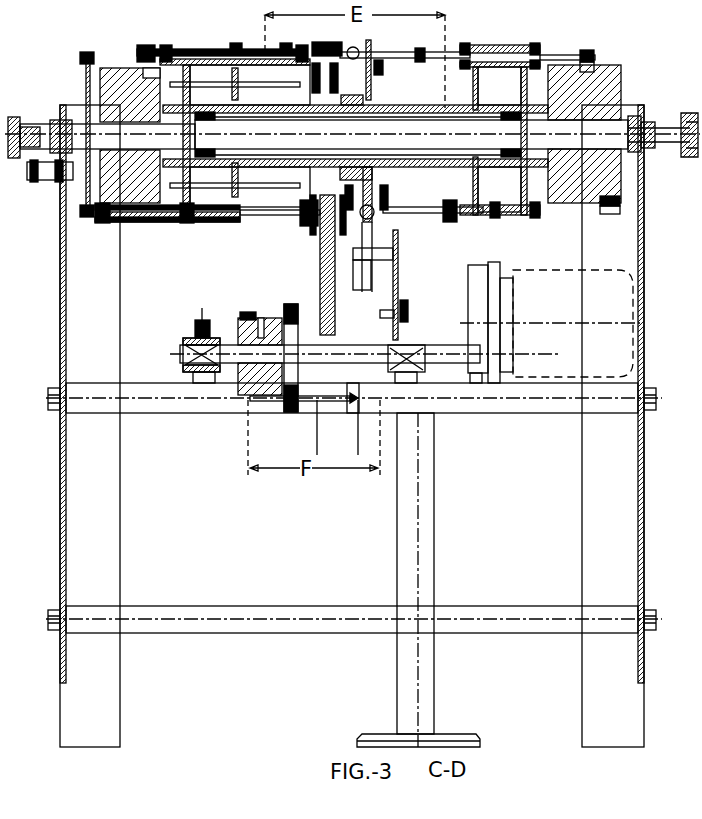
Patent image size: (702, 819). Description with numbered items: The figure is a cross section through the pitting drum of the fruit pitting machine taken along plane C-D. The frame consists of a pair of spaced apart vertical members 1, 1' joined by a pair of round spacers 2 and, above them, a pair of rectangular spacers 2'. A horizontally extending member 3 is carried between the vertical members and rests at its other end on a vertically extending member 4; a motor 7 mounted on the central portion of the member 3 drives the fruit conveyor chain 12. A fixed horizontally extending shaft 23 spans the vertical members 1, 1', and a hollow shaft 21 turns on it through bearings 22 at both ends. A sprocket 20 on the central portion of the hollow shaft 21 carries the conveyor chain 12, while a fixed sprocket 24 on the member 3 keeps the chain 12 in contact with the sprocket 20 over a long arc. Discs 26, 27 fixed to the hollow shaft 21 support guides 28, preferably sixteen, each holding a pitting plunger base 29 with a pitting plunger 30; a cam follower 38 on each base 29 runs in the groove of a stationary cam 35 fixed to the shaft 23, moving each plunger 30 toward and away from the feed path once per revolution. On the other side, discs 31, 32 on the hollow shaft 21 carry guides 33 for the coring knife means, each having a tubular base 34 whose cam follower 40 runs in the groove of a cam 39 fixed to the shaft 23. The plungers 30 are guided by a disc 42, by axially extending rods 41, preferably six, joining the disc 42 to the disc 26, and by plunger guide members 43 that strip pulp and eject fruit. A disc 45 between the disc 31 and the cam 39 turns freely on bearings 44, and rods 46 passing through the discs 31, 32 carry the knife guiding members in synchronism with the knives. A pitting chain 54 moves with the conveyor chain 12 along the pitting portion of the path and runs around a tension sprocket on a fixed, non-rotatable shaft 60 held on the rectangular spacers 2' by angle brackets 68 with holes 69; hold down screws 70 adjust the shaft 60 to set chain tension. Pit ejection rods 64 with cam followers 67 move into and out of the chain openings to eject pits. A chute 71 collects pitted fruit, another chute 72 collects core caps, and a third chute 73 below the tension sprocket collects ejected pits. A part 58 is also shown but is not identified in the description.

The vertical member 1 is at (61, 426).
The vertical member 1' is at (633, 426).
The round spacers 2 is at (354, 641).
The rectangular spacers 2' is at (354, 428).
The horizontally extending member 3 is at (398, 308).
The vertically extending member 4 is at (420, 504).
The motor 7 is at (600, 300).
The fruit conveyor chain 12 is at (355, 72).
The sprocket 20 is at (312, 210).
The hollow shaft 21 is at (470, 48).
The bearings 22 is at (625, 65).
The fixed horizontally extending shaft 23 is at (583, 130).
The fixed sprocket 24 is at (373, 276).
The disc 26 is at (480, 90).
The disc 27 is at (530, 110).
The guides 28 is at (495, 50).
The pitting plunger base 29 is at (565, 54).
The pitting plunger 30 is at (402, 52).
The disc 31 is at (150, 48).
The disc 32 is at (225, 85).
The guides 33 is at (235, 55).
The tubular base 34 is at (262, 50).
The stationary cam 35 is at (580, 95).
The cam follower 38 is at (596, 56).
The cam 39 is at (140, 222).
The cam follower 40 is at (150, 70).
The axially extending rods 41 is at (446, 106).
The disc 42 is at (383, 68).
The plunger guide members 43 is at (372, 45).
The bearings 44 is at (150, 168).
The disc 45 is at (90, 212).
The rods 46 is at (262, 86).
The pitting chain 54 is at (317, 308).
The tie rod 58 is at (88, 78).
The fixed shaft 60 is at (230, 348).
The rods 64 is at (275, 420).
The cam followers 67 is at (252, 392).
The angle brackets 68 is at (210, 395).
The holes 69 is at (198, 330).
The hold down screws 70 is at (208, 320).
The chute 71 is at (396, 288).
The chute 72 is at (308, 262).
The third chute 73 is at (350, 435).